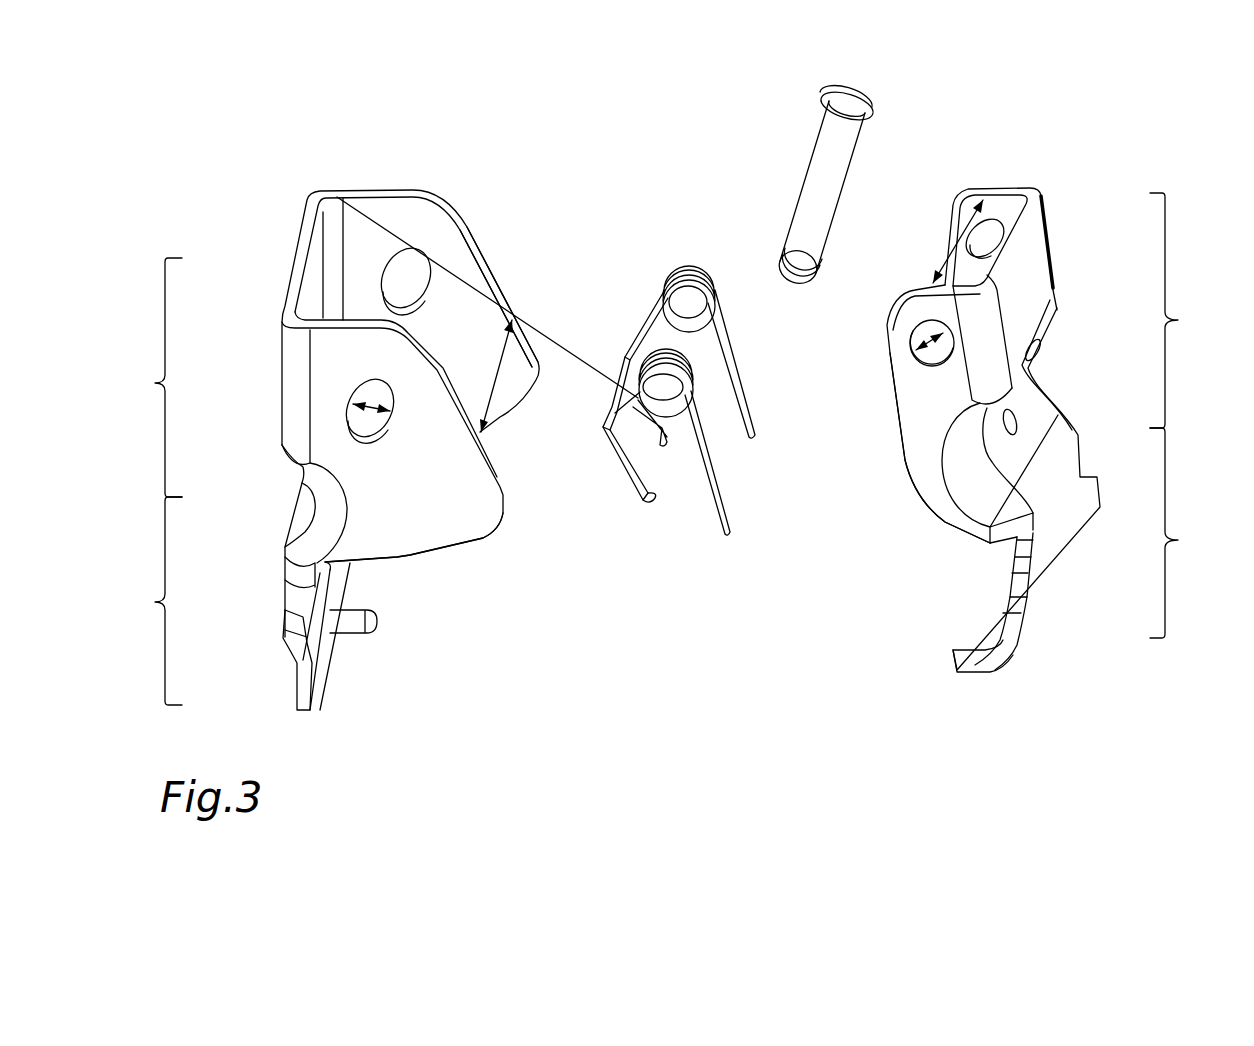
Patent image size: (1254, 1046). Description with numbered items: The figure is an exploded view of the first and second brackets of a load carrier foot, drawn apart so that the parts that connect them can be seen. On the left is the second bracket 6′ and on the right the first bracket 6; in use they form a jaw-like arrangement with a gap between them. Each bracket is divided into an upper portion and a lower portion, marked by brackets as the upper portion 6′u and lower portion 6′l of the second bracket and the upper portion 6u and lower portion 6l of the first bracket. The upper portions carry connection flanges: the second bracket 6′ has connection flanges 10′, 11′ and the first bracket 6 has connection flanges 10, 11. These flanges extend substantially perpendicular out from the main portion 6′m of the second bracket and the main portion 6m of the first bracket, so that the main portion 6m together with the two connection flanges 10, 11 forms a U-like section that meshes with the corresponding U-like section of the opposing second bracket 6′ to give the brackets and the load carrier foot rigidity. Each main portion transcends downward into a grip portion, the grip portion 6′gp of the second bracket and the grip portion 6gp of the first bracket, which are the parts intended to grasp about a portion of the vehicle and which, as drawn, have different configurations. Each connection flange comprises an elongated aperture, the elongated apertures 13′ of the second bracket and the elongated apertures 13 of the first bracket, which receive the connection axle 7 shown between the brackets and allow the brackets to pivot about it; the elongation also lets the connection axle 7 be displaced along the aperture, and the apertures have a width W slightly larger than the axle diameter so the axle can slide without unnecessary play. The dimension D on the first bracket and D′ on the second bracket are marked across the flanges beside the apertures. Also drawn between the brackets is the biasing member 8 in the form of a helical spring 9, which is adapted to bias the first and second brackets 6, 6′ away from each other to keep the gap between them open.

The second bracket 6′ is at (270, 367).
The main portion of the second bracket 6′m is at (318, 268).
The upper portion of the second bracket 6′u is at (141, 377).
The lower portion of the second bracket 6′l is at (146, 601).
The grip portion of the second bracket 6′gp is at (322, 657).
The connection flange of the second bracket 11′ is at (462, 279).
The elongated aperture of the second bracket 13′ is at (392, 270).
The connection flange of the second bracket 10′ is at (425, 523).
The width of the elongated apertures W is at (368, 404).
The depth of flange D′ is at (493, 400).
The biasing member 8 is at (690, 256).
The spring 9 is at (690, 256).
The connection axle 7 is at (825, 170).
The first bracket 6 is at (1063, 256).
The main portion of the first bracket 6m is at (1033, 297).
The upper portion of the first bracket 6u is at (1187, 310).
The lower portion of the first bracket 6l is at (1182, 533).
The grip portion of the first bracket 6gp is at (1053, 553).
The connection flange of the first bracket 11 is at (960, 215).
The elongated aperture of the first bracket 13 is at (993, 233).
The connection flange of the first bracket 10 is at (900, 380).
The depth of flange D is at (957, 233).